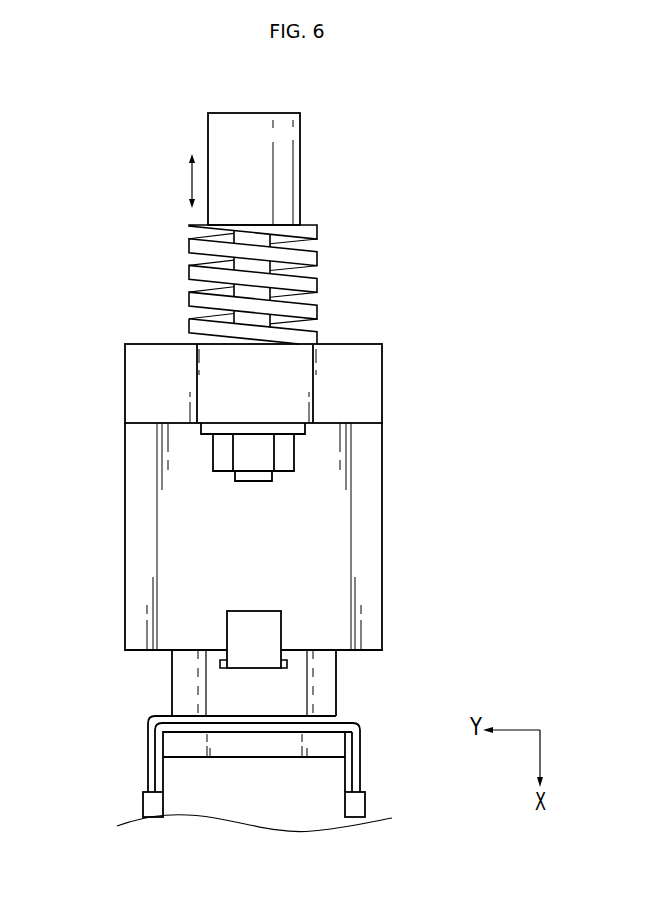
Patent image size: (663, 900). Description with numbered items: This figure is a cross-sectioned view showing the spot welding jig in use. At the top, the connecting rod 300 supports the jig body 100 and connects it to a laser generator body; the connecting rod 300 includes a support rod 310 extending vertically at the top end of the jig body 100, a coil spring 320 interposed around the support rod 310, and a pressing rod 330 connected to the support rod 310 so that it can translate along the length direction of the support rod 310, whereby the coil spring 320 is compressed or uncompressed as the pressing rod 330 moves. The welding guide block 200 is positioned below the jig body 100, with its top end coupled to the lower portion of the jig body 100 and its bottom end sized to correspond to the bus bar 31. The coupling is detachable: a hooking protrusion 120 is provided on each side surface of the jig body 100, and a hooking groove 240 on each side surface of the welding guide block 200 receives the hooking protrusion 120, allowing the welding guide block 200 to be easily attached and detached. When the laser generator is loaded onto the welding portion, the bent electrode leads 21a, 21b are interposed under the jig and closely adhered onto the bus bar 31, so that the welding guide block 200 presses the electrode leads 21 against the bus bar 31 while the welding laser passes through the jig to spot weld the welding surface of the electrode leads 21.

The connecting rod 300 is at (181, 127).
The pressing rod 330 is at (300, 152).
The coil spring 320 is at (318, 282).
The support rod 310 is at (281, 264).
The jig body 100 is at (112, 513).
The hooking protrusion 120 is at (268, 632).
The hooking groove 240 is at (287, 664).
The welding guide block 200 is at (150, 687).
The electrode lead 21b is at (148, 742).
The electrode lead 21a is at (360, 748).
The electrode leads 21 is at (143, 803).
The bus bar 31 is at (258, 743).